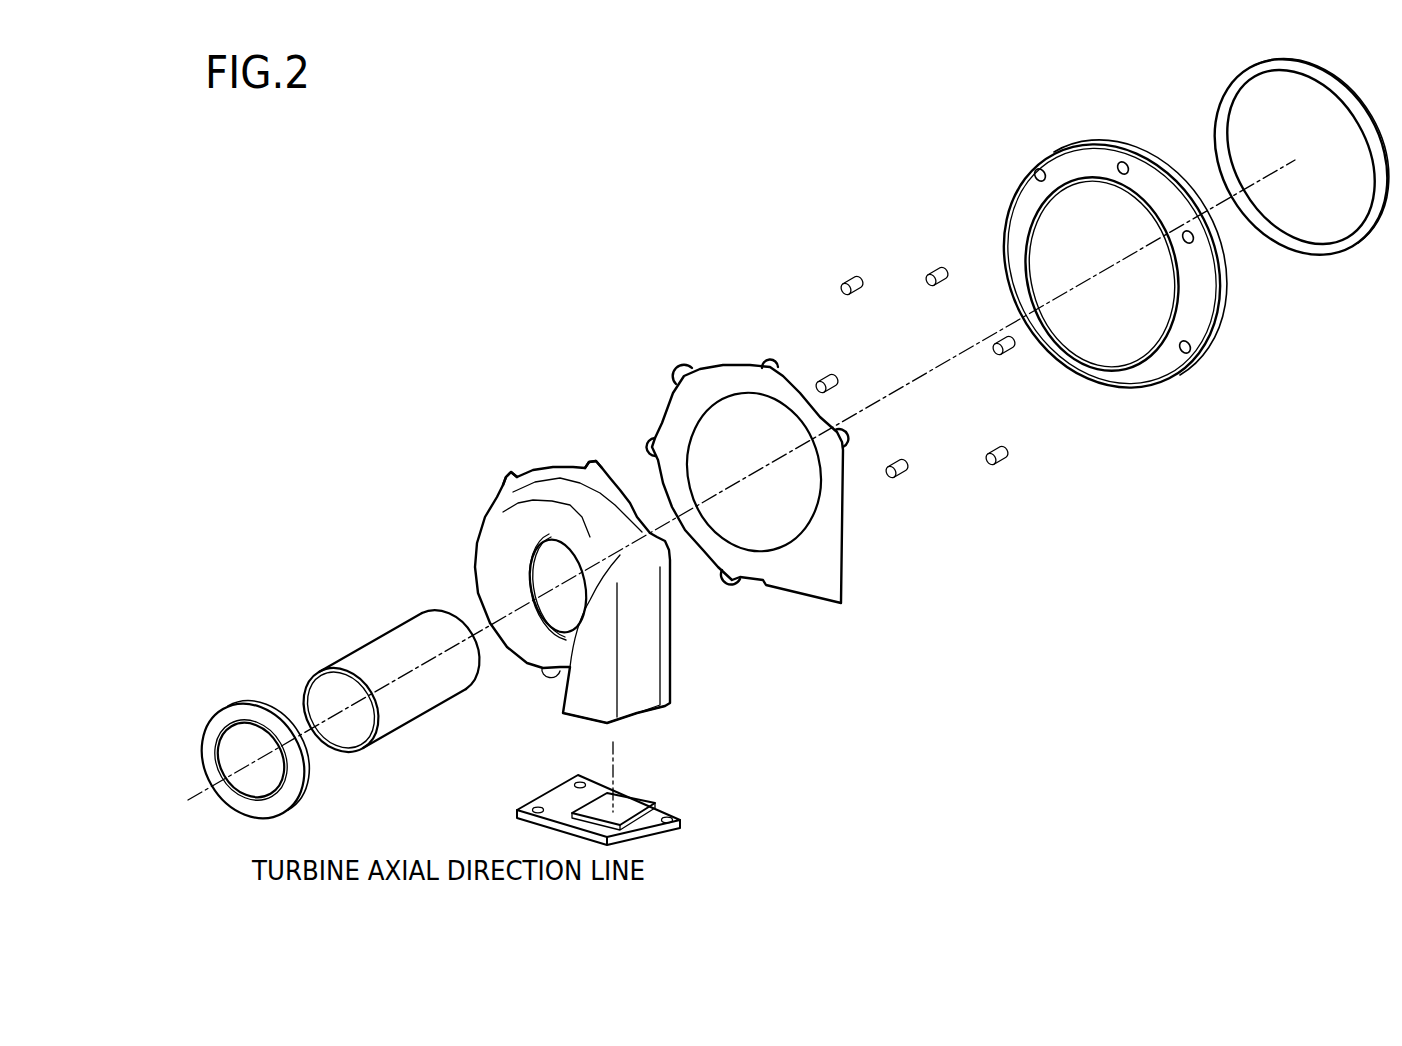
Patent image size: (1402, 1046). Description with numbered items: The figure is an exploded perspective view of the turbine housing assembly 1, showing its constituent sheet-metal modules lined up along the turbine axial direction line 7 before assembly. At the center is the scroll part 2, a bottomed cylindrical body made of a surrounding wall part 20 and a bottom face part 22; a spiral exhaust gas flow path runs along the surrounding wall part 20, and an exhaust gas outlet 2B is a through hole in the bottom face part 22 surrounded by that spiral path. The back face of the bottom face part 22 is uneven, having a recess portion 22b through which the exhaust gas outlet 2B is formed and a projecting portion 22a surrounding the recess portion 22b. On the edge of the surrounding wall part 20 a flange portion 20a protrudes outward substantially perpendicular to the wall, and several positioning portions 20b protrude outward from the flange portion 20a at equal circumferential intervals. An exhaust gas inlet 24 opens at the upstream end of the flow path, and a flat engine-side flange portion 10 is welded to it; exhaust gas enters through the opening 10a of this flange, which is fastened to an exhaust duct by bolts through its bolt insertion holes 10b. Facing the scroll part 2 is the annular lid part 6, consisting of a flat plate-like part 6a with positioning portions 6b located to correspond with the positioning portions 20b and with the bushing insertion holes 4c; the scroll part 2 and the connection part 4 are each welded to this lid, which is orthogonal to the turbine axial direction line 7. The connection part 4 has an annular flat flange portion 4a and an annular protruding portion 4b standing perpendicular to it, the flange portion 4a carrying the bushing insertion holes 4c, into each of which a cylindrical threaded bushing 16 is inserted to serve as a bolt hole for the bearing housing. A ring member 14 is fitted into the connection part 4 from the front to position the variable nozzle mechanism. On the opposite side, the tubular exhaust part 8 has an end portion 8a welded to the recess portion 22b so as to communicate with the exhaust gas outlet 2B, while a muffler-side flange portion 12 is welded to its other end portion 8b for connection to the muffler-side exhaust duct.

The turbine housing assembly 1 is at (447, 195).
The scroll part 2 is at (688, 554).
The exhaust gas outlet 2B is at (567, 582).
The connection part 4 is at (986, 267).
The flange portion 4a is at (1203, 283).
The protruding portion 4b is at (1180, 317).
The bushing insertion holes 4c is at (1182, 350).
The annular lid part 6 is at (731, 418).
The flat plate-like part 6a is at (832, 508).
The positioning portions 6b is at (683, 371).
The turbine axial direction line 7 is at (203, 793).
The exhaust part 8 is at (401, 702).
The end portion 8a is at (478, 663).
The other end portion 8b is at (343, 755).
The engine-side flange portion 10 is at (637, 793).
The opening 10a is at (580, 808).
The bolt insertion holes 10b is at (677, 815).
The muffler-side flange portion 12 is at (233, 722).
The ring member 14 is at (1220, 103).
The threaded bushing 16 is at (845, 279).
The surrounding wall part 20 is at (637, 612).
The flange portion 20a is at (557, 470).
The positioning portions 20b is at (503, 478).
The bottom face part 22 is at (420, 591).
The projecting portion 22a is at (500, 553).
The recess portion 22b is at (520, 590).
The exhaust gas inlet 24 is at (640, 722).